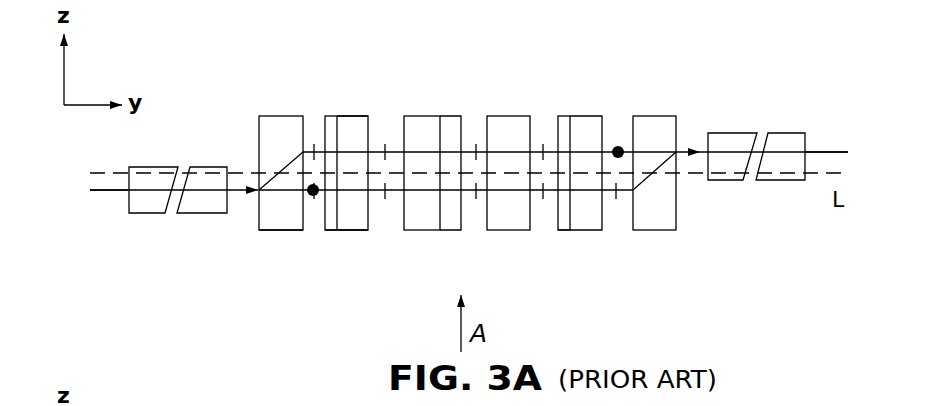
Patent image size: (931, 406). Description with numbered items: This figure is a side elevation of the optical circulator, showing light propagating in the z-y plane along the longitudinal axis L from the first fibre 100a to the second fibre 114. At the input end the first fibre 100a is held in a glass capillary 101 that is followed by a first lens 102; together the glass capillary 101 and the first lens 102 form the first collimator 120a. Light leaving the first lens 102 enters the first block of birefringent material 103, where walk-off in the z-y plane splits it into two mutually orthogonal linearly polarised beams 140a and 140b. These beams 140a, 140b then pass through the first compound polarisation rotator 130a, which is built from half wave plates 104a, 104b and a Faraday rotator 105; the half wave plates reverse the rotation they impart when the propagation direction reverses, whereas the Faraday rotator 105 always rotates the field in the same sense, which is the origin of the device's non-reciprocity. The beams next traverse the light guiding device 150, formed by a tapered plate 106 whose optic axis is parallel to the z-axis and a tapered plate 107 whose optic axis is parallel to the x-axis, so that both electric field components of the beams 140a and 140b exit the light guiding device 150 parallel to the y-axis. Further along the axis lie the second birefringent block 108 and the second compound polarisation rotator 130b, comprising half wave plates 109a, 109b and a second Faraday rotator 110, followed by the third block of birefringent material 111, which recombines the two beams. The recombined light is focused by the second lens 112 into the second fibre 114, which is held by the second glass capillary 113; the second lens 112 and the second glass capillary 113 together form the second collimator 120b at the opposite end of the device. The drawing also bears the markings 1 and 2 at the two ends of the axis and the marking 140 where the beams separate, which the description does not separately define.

The input port 1 is at (174, 204).
The output port 2 is at (774, 134).
The first fibre 100a is at (113, 190).
The glass capillary 101 is at (153, 167).
The first lens 102 is at (212, 167).
The first block of birefringent material 103 is at (333, 116).
The half wave plate 104a is at (355, 116).
The half wave plate 104b is at (328, 230).
The Faraday rotator 105 is at (363, 116).
The tapered plate 106 is at (427, 116).
The tapered plate 107 is at (453, 116).
The second birefringent block 108 is at (512, 116).
The half wave plate 109a is at (567, 116).
The half wave plate 109b is at (567, 230).
The Faraday rotator 110 is at (595, 116).
The third block of birefringent material 111 is at (653, 116).
The second lens 112 is at (720, 133).
The second glass capillary 113 is at (782, 133).
The second fibre 114 is at (822, 152).
The first collimator 120a is at (199, 155).
The second collimator 120b is at (749, 156).
The first compound polarisation rotator 130a is at (394, 156).
The second compound polarisation rotator 130b is at (623, 156).
The polarization beam splitter 140 is at (267, 156).
The linearly polarised beam 140a is at (278, 208).
The linearly polarised beam 140b is at (283, 157).
The light guiding device 150 is at (472, 156).